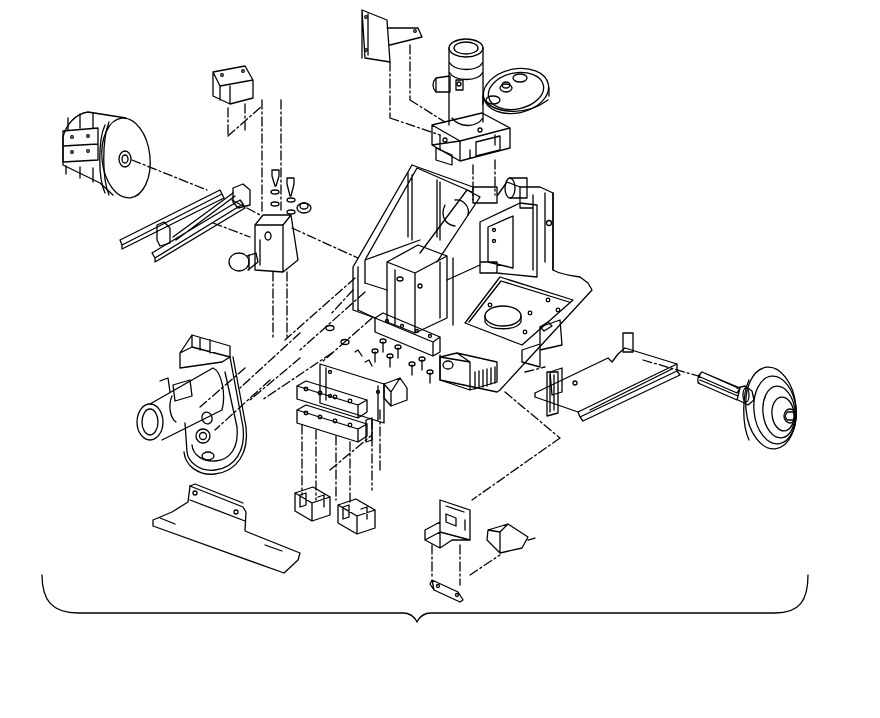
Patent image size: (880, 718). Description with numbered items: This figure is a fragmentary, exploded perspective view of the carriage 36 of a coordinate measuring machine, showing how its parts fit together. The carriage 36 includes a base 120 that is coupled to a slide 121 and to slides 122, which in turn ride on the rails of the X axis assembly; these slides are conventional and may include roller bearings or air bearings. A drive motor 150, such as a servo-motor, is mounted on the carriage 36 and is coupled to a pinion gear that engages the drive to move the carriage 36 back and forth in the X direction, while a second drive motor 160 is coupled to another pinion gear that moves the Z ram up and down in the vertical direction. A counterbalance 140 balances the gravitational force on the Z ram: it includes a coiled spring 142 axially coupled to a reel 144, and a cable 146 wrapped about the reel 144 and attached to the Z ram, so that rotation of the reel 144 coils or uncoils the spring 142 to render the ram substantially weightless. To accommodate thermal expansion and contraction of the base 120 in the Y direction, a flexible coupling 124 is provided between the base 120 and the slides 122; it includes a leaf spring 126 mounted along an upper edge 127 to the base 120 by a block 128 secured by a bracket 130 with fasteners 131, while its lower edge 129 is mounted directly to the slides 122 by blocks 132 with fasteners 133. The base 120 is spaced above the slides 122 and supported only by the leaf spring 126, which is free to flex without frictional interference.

The carriage 36 is at (593, 82).
The base 120 is at (587, 292).
The slide 121 is at (566, 337).
The slides 122 is at (354, 533).
The flexible coupling 124 is at (416, 436).
The leaf spring 126 is at (323, 380).
The upper edge 127 is at (405, 385).
The block 128 is at (368, 432).
The lower edge 129 is at (376, 418).
The bracket 130 is at (200, 530).
The fasteners 131 is at (190, 491).
The blocks 132 is at (296, 440).
The fasteners 133 is at (305, 445).
The counterbalance 140 is at (127, 105).
The coiled spring 142 is at (74, 132).
The reel 144 is at (764, 447).
The cable 146 is at (782, 393).
The drive motor 150 is at (486, 68).
The second drive motor 160 is at (168, 385).